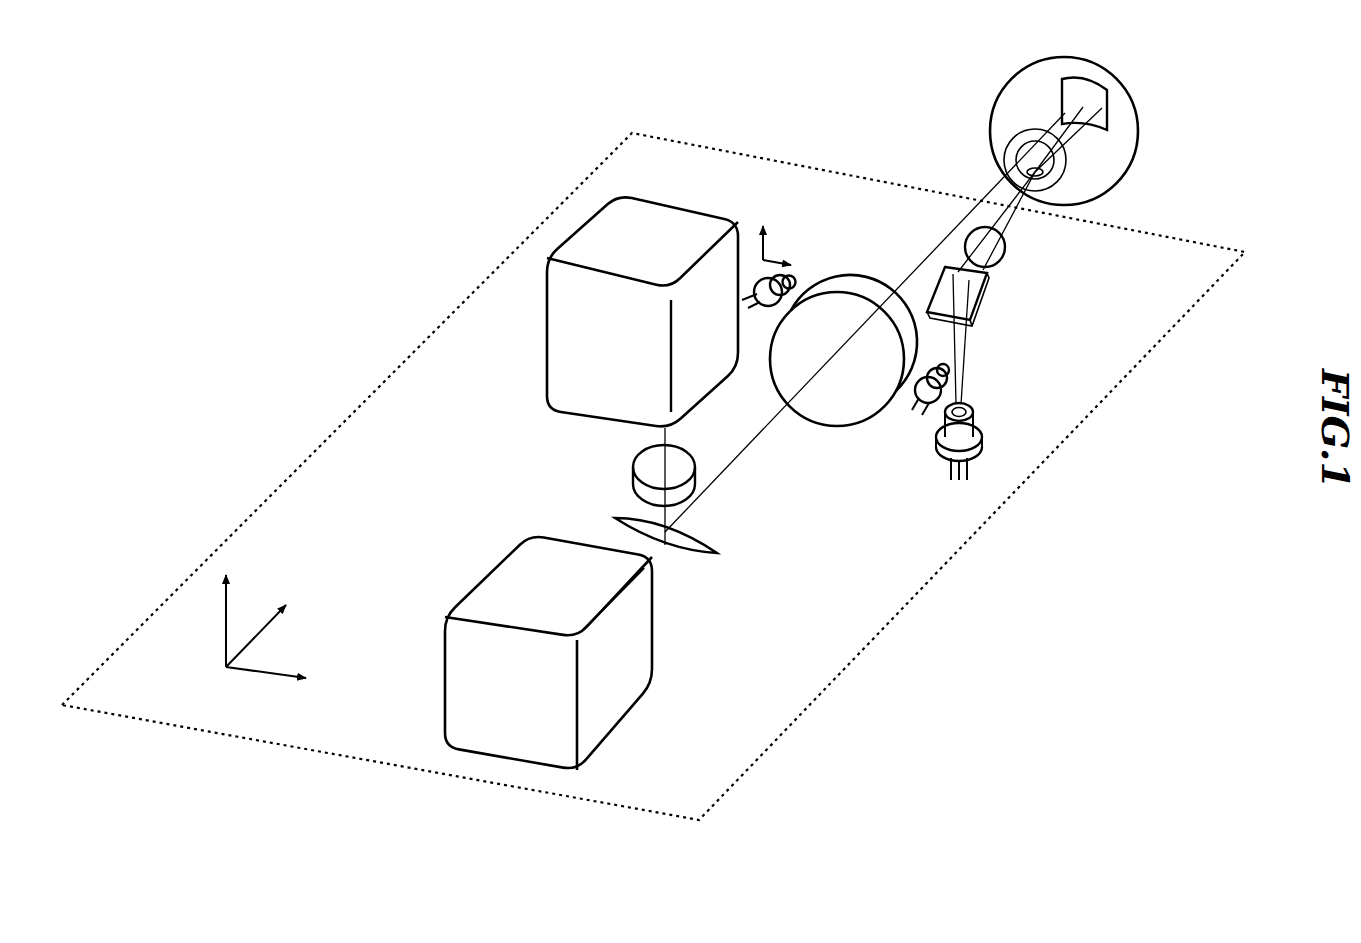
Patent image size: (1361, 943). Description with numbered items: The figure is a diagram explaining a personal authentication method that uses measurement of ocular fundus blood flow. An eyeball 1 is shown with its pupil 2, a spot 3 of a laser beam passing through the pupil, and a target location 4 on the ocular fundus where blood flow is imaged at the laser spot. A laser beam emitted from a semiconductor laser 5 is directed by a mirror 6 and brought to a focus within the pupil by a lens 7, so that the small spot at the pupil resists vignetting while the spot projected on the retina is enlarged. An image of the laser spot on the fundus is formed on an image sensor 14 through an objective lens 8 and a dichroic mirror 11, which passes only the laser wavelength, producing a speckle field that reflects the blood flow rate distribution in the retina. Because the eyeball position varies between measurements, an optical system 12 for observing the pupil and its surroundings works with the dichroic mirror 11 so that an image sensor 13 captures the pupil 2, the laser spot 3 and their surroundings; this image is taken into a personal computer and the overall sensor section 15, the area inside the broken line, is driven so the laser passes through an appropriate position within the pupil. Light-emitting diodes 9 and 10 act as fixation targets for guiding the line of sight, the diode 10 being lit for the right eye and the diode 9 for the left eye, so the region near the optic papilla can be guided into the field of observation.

The eyeball 1 is at (1072, 134).
The pupil 2 is at (1053, 172).
The spot of a laser beam 3 is at (1059, 205).
The target location 4 is at (1130, 59).
The semiconductor laser 5 is at (973, 431).
The mirror 6 is at (965, 300).
The lens for projecting a laser 7 is at (998, 258).
The objective lens 8 is at (843, 327).
The light-emitting diode 9 is at (780, 268).
The light-emitting diode 10 is at (919, 404).
The dichroic mirror 11 is at (684, 522).
The optical system for observing the pupil 12 is at (687, 452).
The image sensor 13 is at (640, 330).
The image sensor 14 is at (579, 653).
The overall sensor section 15 is at (653, 476).